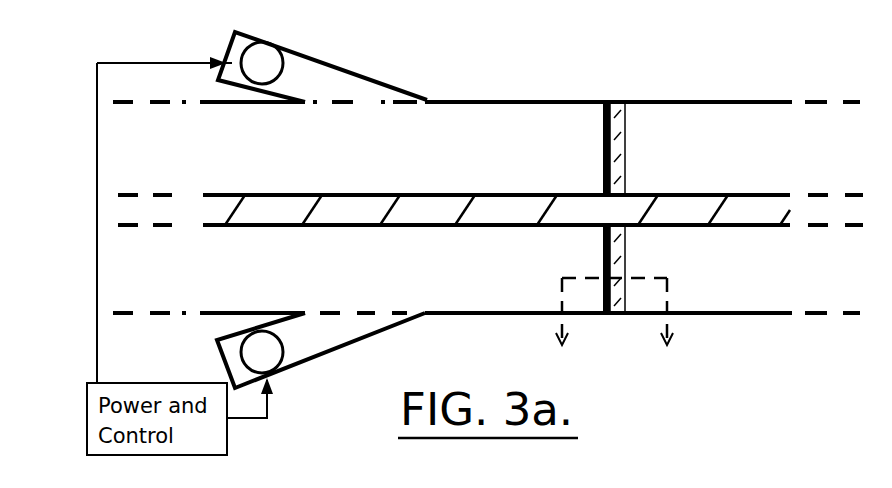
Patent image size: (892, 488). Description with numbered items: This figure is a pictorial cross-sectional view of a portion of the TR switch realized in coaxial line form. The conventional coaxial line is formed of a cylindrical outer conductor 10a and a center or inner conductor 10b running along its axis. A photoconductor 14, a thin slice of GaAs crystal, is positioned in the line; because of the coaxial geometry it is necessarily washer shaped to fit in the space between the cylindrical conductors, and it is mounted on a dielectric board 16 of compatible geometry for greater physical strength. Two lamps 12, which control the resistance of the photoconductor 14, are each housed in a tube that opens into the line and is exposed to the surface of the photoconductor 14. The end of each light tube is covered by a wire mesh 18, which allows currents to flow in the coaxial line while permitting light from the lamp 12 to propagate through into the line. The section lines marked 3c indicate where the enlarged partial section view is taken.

The cylindrical outer conductor 10a is at (517, 100).
The center or inner conductor 10b is at (293, 192).
The lamp 12 is at (272, 45).
The photoconductor 14 is at (602, 113).
The dielectric board 16 is at (361, 50).
The wire mesh 18 is at (383, 105).
The section line 3c is at (621, 325).